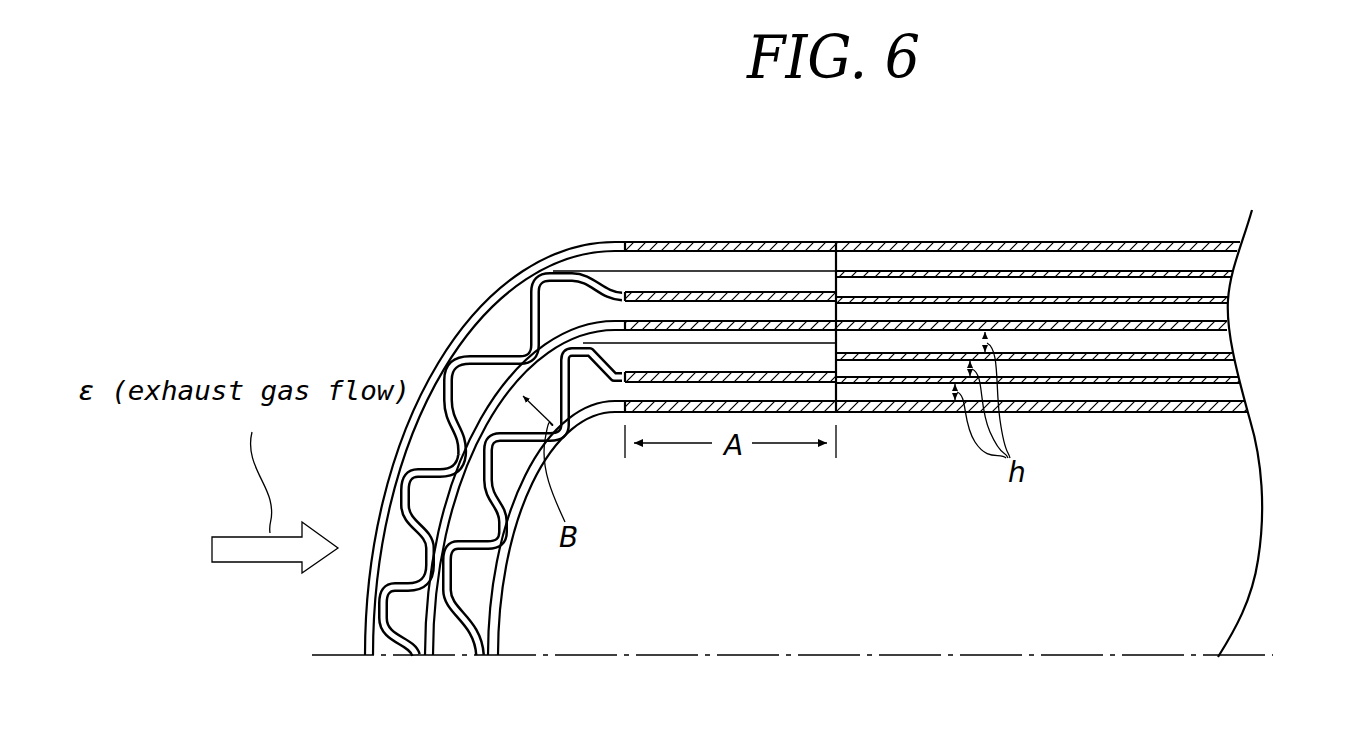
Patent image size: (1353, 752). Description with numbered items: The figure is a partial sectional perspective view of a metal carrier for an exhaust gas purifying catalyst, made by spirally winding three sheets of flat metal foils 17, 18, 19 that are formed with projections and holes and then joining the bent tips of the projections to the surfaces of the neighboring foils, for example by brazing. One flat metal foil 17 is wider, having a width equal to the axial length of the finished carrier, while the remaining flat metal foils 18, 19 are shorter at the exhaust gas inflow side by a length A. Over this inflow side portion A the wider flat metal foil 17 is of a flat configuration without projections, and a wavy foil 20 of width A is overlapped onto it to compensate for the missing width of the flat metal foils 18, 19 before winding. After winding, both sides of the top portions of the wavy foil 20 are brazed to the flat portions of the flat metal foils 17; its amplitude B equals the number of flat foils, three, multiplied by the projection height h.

The flat metal foil 17 is at (930, 401).
The flat metal foil 18 is at (1208, 302).
The flat metal foil 19 is at (1159, 353).
The wavy foil 20 is at (612, 357).